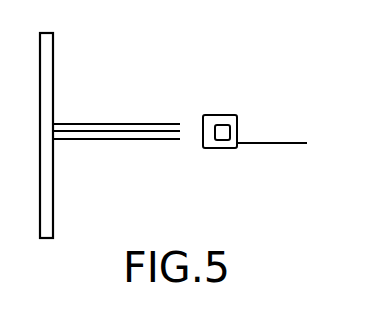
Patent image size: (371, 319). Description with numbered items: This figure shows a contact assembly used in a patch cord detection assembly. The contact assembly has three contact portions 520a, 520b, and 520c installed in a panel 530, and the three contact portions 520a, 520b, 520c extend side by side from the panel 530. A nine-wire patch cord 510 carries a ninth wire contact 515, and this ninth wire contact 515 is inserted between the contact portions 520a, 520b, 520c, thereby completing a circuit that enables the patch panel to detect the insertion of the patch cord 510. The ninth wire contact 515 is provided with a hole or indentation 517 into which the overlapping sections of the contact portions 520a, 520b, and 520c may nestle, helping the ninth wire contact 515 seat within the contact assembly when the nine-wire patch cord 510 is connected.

The panel 530 is at (53, 57).
The contact portion 520a is at (130, 124).
The contact portion 520b is at (63, 123).
The contact portion 520c is at (95, 140).
The ninth wire contact 515 is at (215, 115).
The hole or indentation 517 is at (219, 138).
The nine-wire patch cord 510 is at (263, 143).